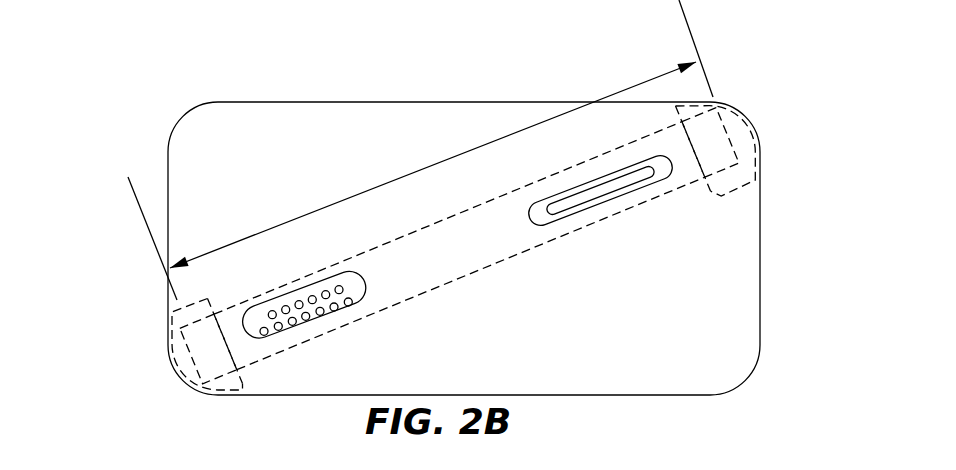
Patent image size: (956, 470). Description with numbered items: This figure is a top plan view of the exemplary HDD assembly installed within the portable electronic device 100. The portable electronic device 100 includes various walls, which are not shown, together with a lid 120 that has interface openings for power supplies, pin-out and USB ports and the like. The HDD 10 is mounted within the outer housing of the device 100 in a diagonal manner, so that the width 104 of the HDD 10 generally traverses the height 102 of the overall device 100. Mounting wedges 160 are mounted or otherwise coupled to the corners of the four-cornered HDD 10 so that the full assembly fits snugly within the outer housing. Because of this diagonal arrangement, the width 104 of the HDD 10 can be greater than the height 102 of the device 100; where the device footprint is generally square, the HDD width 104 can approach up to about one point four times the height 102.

The portable electronic device 100 is at (133, 129).
The height 102 is at (740, 283).
The width 104 is at (288, 215).
The HDD 10 is at (469, 260).
The lid 120 is at (582, 334).
The mounting wedges 160 is at (755, 132).